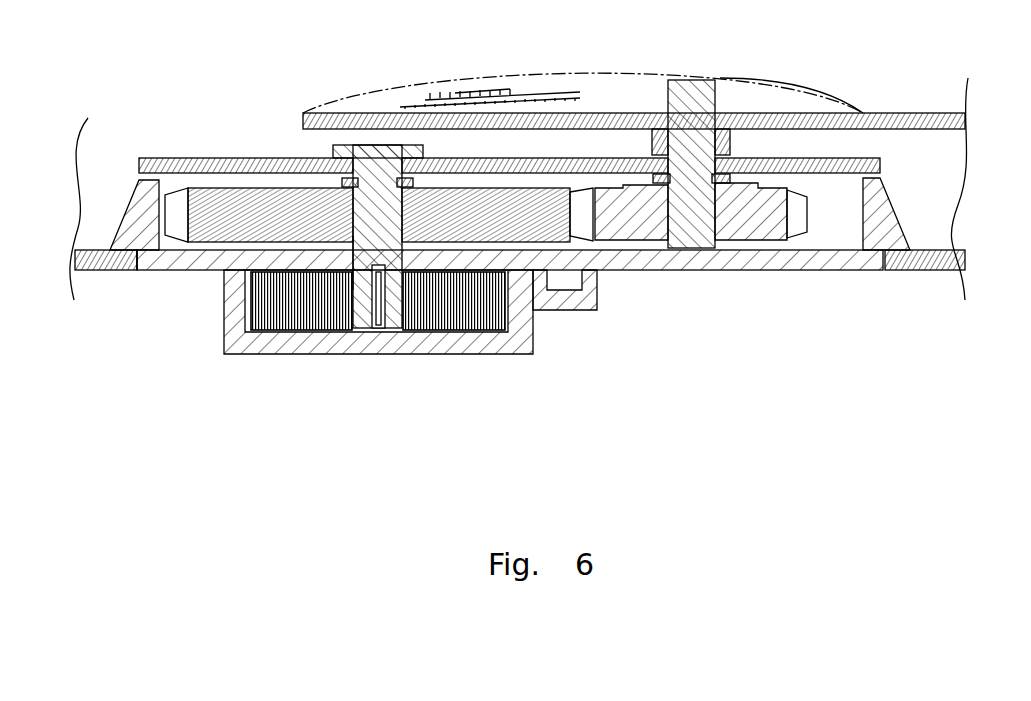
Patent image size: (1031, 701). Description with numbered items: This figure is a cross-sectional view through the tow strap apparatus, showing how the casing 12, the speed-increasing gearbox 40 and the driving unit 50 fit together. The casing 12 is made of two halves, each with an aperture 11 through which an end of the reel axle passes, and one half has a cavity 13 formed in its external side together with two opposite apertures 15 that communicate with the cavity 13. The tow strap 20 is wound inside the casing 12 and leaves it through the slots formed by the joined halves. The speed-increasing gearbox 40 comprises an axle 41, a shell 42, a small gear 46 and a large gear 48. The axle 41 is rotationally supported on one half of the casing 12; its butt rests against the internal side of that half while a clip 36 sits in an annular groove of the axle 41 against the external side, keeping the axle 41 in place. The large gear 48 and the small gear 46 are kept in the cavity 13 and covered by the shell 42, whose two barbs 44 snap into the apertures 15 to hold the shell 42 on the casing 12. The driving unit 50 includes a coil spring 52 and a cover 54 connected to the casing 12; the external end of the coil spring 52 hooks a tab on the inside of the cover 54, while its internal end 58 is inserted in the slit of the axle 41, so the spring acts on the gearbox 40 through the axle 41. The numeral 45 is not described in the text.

The aperture 11 is at (355, 157).
The casing 12 is at (935, 263).
The cavity 13 is at (138, 253).
The aperture 15 is at (140, 172).
The tow strap 20 is at (493, 85).
The clip 36 is at (658, 168).
The speed-increasing gearbox 40 is at (738, 392).
The axle 41 is at (393, 214).
The shell 42 is at (728, 263).
The barb 44 is at (877, 220).
The bearing 45 is at (356, 237).
The small gear 46 is at (633, 230).
The large gear 48 is at (545, 218).
The driving unit 50 is at (545, 406).
The coil spring 52 is at (447, 320).
The cover 54 is at (528, 340).
The internal end 58 is at (378, 325).